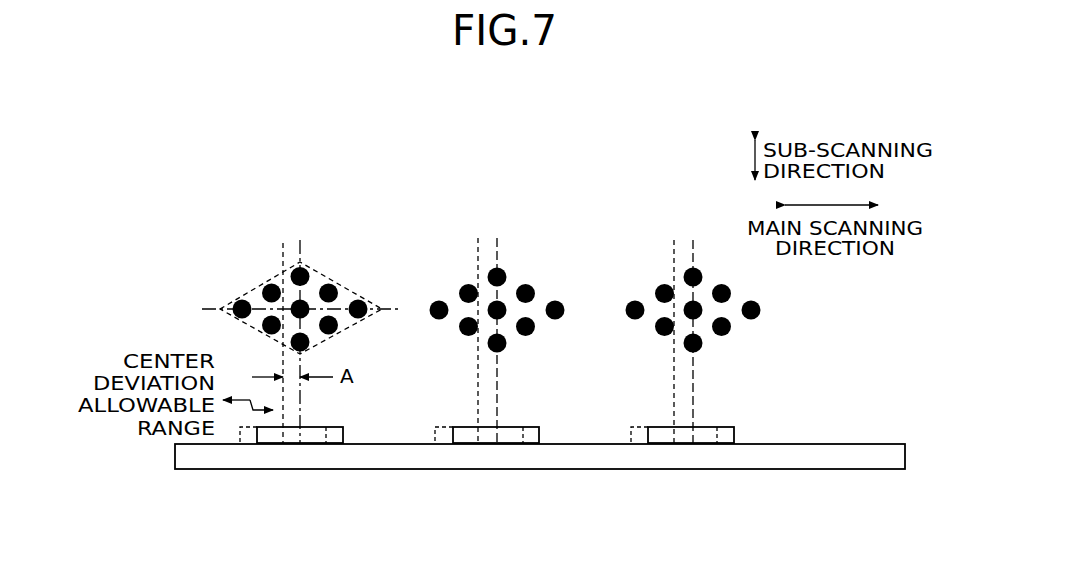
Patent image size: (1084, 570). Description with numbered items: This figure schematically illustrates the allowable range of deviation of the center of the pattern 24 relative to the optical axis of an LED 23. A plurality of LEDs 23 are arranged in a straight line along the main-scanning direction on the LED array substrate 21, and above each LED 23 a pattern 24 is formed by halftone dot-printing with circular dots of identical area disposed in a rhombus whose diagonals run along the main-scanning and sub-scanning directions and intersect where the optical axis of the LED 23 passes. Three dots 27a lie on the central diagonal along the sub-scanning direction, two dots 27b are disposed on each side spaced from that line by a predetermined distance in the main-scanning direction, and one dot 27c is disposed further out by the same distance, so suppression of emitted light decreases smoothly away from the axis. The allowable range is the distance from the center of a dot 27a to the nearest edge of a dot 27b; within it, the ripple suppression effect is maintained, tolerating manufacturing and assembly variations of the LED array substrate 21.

The LED array substrate 21 is at (773, 471).
The LED 23 is at (702, 437).
The pattern 24 is at (479, 259).
The dots 27a is at (282, 236).
The dots 27b is at (254, 262).
The dot 27c is at (238, 303).